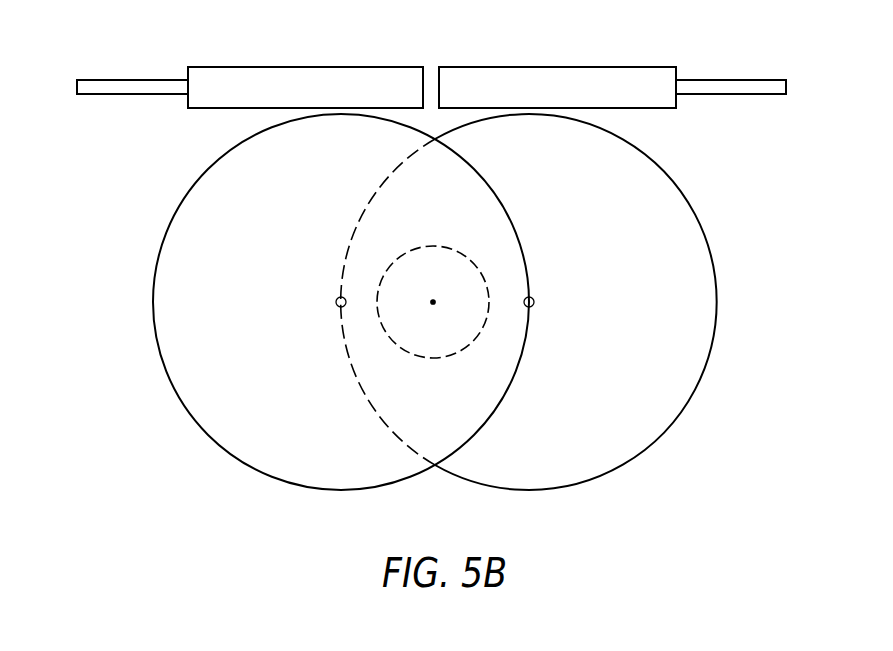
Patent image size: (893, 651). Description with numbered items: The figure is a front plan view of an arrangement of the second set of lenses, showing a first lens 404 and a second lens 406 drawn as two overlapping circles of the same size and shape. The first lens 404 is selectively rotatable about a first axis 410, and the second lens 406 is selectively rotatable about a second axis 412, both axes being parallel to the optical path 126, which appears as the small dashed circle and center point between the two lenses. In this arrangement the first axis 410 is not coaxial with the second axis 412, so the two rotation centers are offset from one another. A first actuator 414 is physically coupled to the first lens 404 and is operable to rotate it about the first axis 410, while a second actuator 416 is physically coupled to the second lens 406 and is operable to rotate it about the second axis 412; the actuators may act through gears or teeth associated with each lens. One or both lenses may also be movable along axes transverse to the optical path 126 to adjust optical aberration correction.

The first lens 404 is at (147, 243).
The second lens 406 is at (719, 243).
The first axis 410 is at (336, 302).
The second axis 412 is at (534, 302).
The first actuator 414 is at (270, 65).
The second actuator 416 is at (573, 65).
The optical path 126 is at (433, 358).